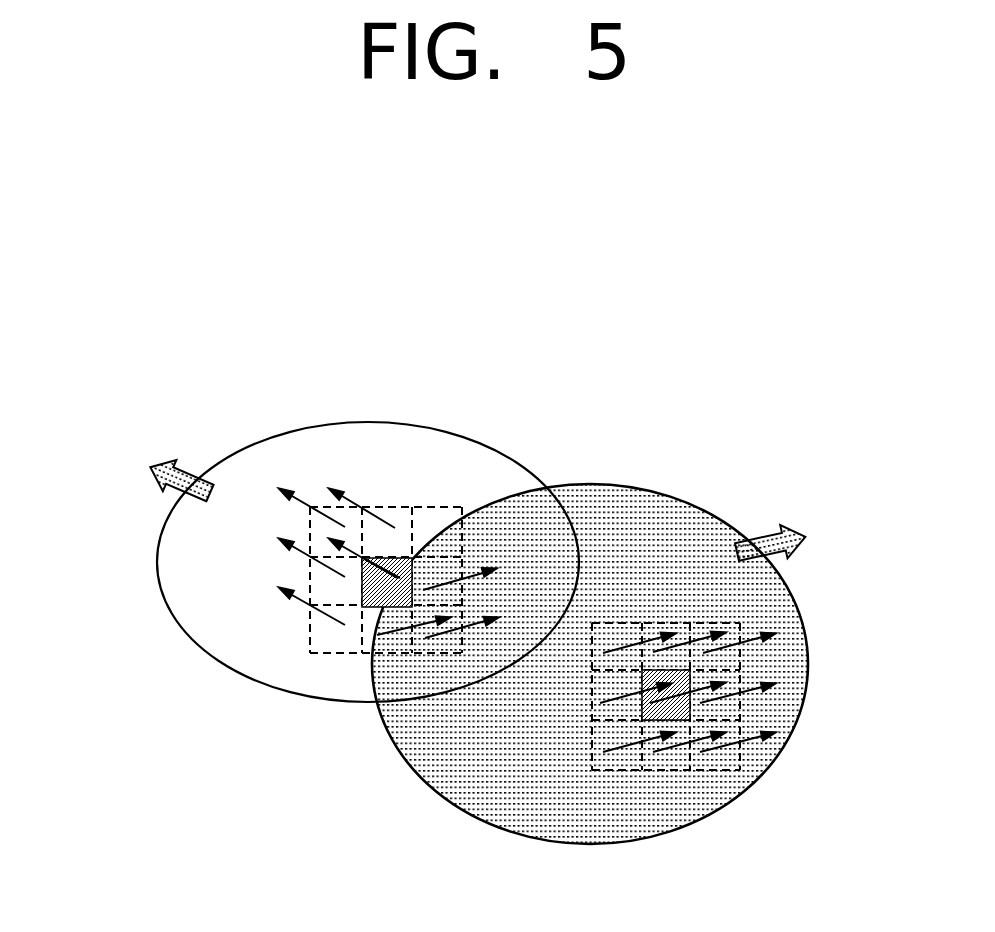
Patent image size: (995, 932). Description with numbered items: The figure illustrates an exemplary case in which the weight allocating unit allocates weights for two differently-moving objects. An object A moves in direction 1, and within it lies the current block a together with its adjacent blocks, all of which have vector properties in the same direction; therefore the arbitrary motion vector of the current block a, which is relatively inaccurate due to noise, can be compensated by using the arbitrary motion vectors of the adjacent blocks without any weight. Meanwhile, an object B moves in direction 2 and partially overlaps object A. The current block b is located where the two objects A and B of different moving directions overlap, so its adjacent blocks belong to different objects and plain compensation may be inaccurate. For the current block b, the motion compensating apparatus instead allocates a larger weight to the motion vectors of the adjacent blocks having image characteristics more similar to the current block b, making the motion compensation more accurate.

The object A is at (592, 483).
The object B is at (370, 422).
The current block a is at (690, 670).
The current block b is at (396, 558).
The direction 1 is at (805, 552).
The direction 2 is at (150, 470).